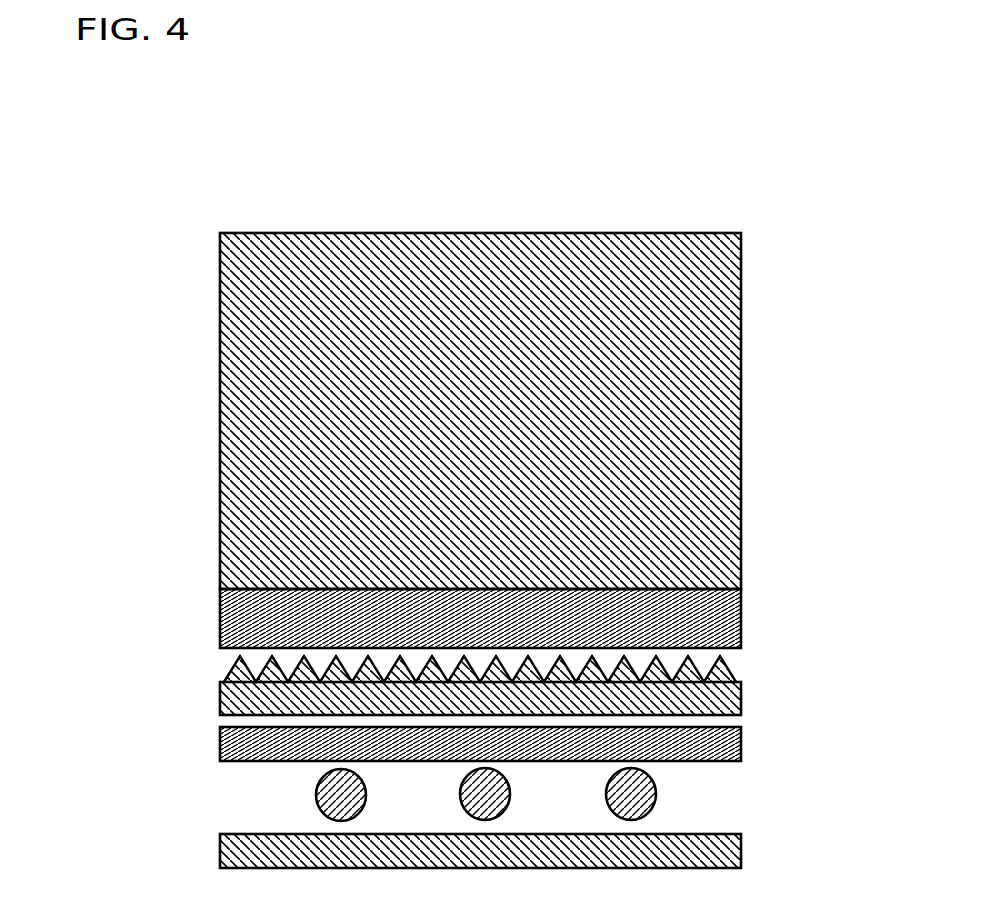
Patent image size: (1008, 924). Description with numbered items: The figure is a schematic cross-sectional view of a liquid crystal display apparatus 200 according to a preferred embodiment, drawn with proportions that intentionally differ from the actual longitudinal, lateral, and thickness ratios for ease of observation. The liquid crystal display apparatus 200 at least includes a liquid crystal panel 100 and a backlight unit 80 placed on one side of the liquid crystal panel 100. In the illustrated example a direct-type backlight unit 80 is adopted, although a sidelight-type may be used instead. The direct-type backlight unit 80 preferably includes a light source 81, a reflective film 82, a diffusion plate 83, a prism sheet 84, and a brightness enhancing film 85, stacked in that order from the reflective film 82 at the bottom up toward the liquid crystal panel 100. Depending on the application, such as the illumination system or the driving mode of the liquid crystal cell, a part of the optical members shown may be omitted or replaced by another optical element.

The liquid crystal display apparatus 200 is at (688, 191).
The liquid crystal panel 100 is at (710, 410).
The backlight unit 80 is at (765, 592).
The brightness enhancing film 85 is at (237, 625).
The prism sheet 84 is at (237, 702).
The diffusion plate 83 is at (237, 744).
The light source 81 is at (330, 797).
The reflective film 82 is at (237, 852).